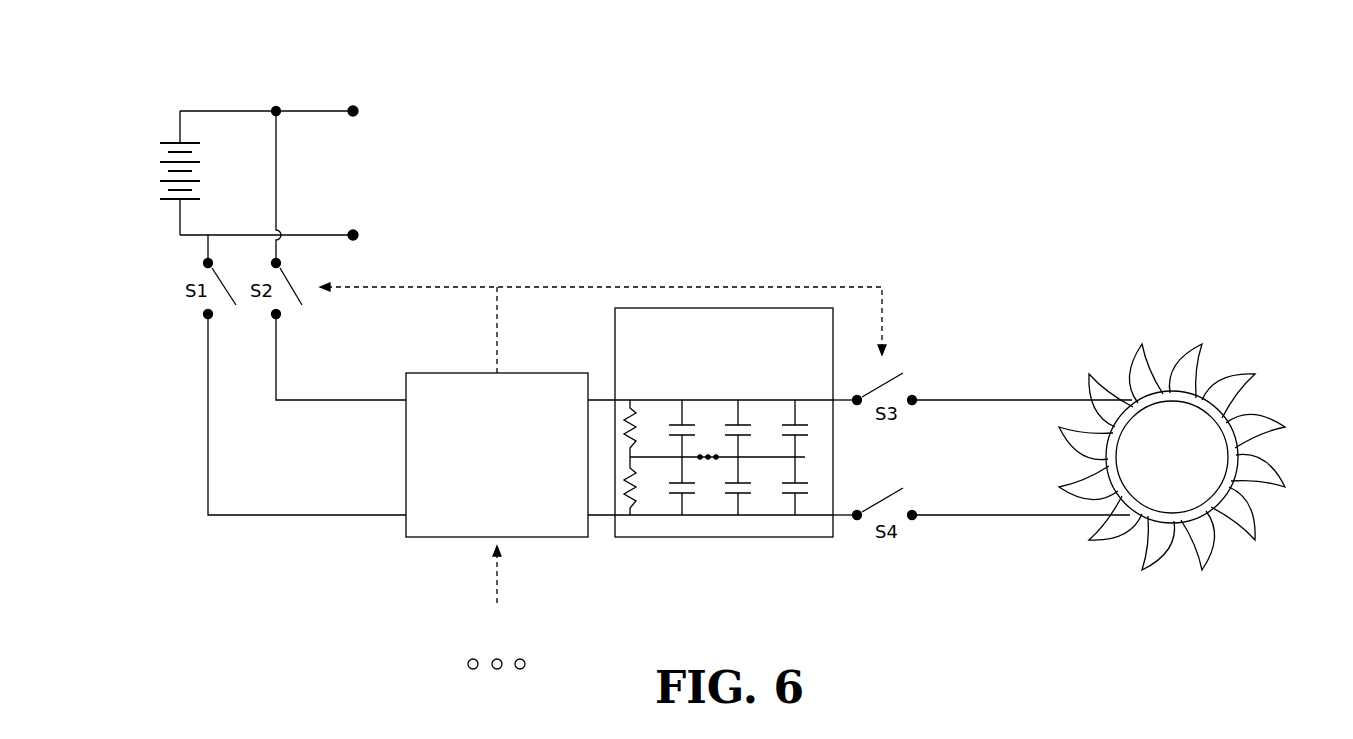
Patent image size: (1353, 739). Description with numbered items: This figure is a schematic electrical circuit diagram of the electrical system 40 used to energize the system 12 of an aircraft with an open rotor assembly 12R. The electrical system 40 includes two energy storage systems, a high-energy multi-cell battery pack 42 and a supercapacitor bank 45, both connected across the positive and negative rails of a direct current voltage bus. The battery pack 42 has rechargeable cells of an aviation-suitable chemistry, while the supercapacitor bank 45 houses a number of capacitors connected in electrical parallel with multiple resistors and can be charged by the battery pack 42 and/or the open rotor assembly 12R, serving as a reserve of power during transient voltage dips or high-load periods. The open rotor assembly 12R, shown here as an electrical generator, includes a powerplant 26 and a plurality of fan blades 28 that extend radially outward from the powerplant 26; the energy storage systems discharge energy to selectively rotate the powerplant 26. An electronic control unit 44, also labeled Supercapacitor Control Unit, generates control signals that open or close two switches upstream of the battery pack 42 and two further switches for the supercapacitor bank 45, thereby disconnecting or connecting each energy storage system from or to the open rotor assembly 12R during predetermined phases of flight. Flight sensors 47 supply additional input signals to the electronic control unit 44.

The system 12 is at (737, 108).
The open rotor assembly 12R is at (1202, 425).
The powerplant 26 is at (1177, 500).
The fan blades 28 is at (1295, 333).
The electrical system 40 is at (772, 237).
The battery pack 42 is at (138, 163).
The electronic control unit 44 is at (441, 537).
The supercapacitor bank 45 is at (745, 537).
The flight sensors 47 is at (452, 643).